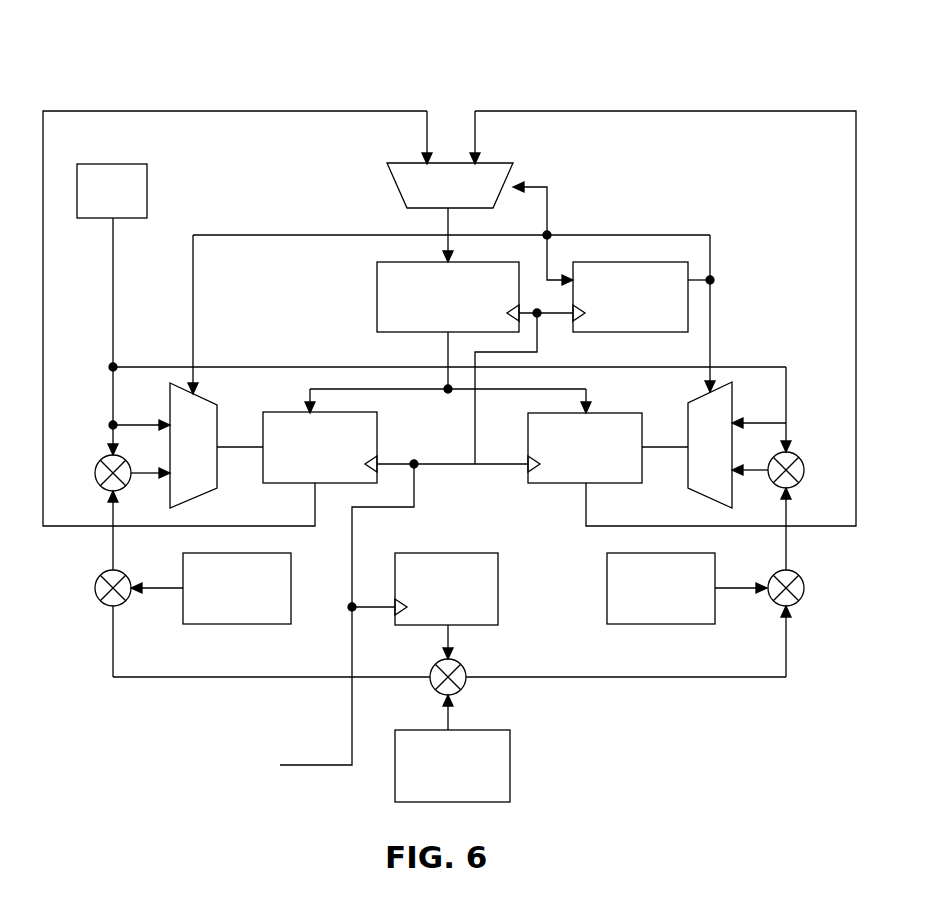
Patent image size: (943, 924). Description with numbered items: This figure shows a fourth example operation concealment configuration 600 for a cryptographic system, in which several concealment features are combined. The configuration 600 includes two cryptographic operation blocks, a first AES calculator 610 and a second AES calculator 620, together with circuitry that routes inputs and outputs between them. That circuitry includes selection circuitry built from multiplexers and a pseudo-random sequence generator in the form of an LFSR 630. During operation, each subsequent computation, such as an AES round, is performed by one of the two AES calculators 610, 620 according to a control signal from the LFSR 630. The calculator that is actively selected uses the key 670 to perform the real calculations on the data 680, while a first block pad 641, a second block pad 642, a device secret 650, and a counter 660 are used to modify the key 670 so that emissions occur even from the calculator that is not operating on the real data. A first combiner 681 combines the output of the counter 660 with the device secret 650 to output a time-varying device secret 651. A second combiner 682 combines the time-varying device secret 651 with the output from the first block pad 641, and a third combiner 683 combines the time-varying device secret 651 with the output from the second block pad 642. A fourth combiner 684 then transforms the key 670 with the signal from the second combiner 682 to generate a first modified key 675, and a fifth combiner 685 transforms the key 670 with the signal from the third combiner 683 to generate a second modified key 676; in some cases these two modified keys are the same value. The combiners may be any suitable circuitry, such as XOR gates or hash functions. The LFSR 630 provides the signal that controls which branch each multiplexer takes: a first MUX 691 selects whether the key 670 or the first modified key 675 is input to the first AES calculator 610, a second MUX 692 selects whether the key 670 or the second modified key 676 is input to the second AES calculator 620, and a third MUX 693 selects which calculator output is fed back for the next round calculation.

The operation concealment configuration 600 is at (95, 72).
The key 670 is at (148, 178).
The third MUX 693 is at (482, 165).
The data 680 is at (448, 337).
The LFSR 630 is at (594, 349).
The first MUX 691 is at (172, 406).
The second MUX 692 is at (735, 410).
The first AES calculator 610 is at (284, 406).
The second AES calculator 620 is at (638, 412).
The fourth combiner 684 is at (108, 464).
The fifth combiner 685 is at (802, 455).
The first modified key 675 is at (145, 473).
The second modified key 676 is at (752, 473).
The second combiner 682 is at (86, 597).
The third combiner 683 is at (798, 606).
The first block pad 641 is at (214, 628).
The second block pad 642 is at (697, 626).
The time-varying device secret 651 is at (148, 680).
The counter 660 is at (498, 577).
The first combiner 681 is at (465, 690).
The device secret 650 is at (510, 770).